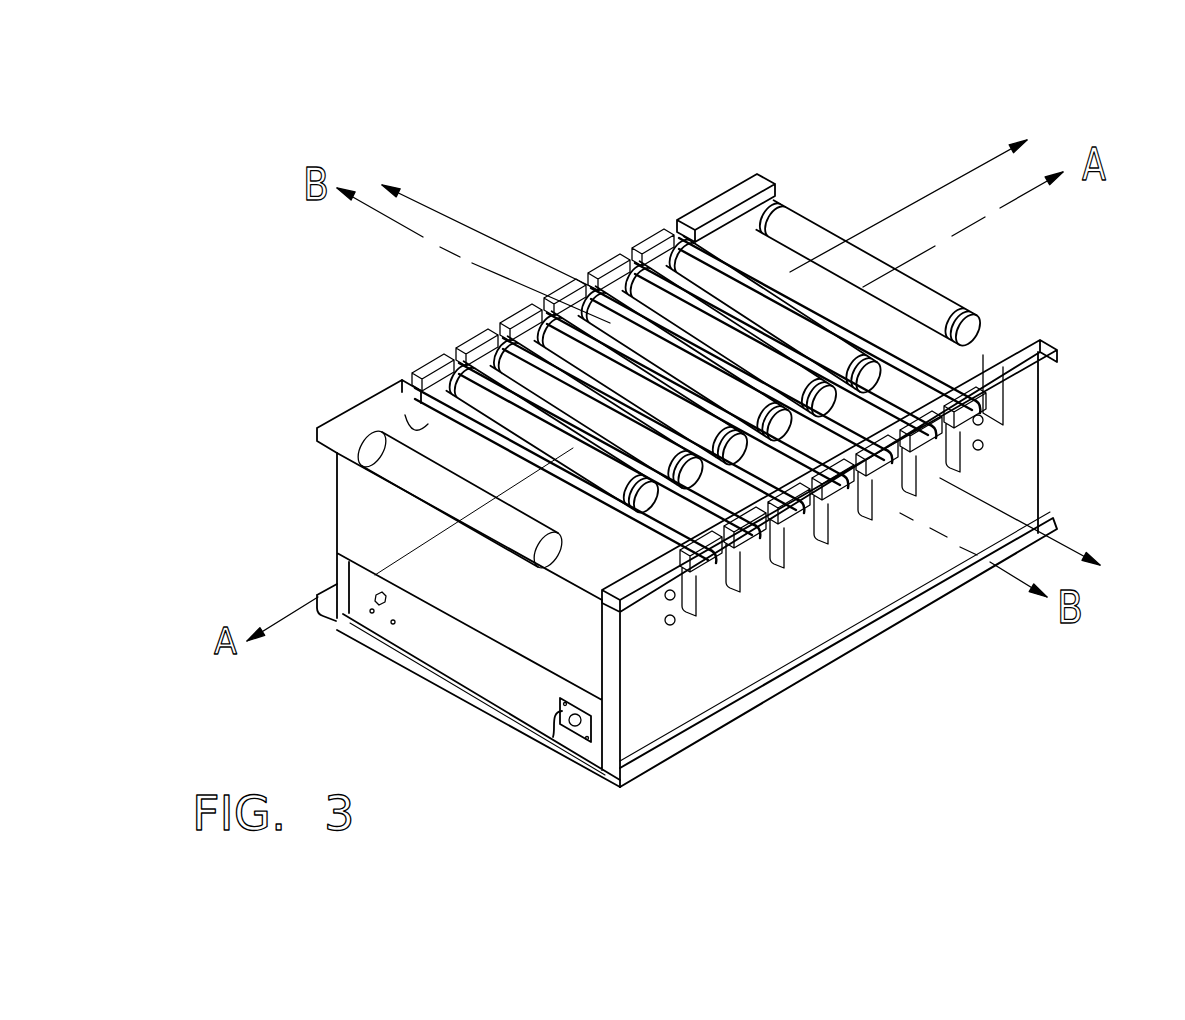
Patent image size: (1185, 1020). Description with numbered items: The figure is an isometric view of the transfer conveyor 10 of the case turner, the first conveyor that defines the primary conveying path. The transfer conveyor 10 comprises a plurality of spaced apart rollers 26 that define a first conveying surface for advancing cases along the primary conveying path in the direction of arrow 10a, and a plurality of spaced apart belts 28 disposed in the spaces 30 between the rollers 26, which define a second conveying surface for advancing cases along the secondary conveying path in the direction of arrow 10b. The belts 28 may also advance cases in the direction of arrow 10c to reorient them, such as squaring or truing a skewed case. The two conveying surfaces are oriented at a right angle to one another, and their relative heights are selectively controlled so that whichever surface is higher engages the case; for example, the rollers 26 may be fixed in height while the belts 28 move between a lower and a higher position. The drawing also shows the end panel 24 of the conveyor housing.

The transfer conveyor 10 is at (736, 443).
The arrow 10a is at (942, 186).
The arrow 10b is at (448, 217).
The arrow 10c is at (1000, 518).
The end panel 24 is at (1040, 450).
The rollers 26 is at (428, 422).
The belts 28 is at (742, 268).
The spaces 30 is at (700, 593).